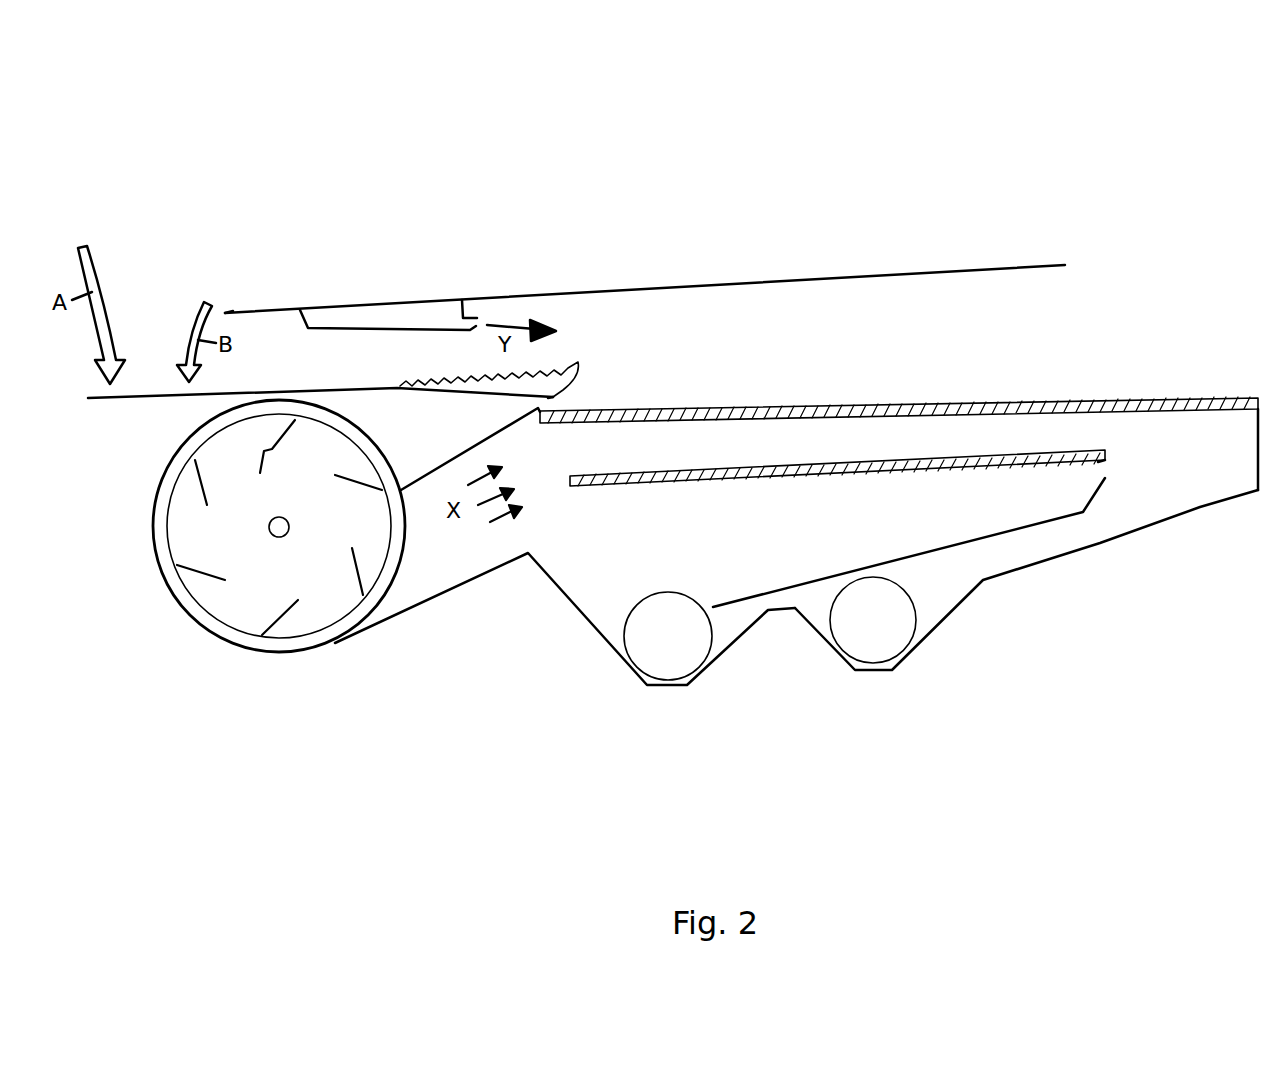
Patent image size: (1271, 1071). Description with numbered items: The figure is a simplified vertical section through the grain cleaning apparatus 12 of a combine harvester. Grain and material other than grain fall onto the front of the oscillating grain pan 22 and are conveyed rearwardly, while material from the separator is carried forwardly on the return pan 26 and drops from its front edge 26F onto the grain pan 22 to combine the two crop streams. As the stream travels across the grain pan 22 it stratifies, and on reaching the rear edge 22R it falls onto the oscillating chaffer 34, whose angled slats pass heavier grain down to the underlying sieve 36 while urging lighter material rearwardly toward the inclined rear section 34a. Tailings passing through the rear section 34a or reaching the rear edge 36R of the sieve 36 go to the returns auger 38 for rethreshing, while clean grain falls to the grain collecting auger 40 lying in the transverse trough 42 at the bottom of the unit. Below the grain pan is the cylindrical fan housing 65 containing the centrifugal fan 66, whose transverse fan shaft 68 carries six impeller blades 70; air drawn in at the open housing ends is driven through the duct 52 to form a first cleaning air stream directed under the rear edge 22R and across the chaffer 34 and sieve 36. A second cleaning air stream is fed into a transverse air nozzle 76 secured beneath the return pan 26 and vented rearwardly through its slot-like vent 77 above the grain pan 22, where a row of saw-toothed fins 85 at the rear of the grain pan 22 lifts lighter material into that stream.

The grain cleaning apparatus 12 is at (130, 120).
The grain pan 22 is at (114, 402).
The rear edge of grain pan 22R is at (553, 397).
The return pan 26 is at (985, 258).
The front edge of return pan 26F is at (228, 312).
The chaffer 34 is at (930, 412).
The inclined rear section of chaffer 34a is at (1187, 406).
The sieve 36 is at (667, 477).
The rear edge of sieve 36R is at (1097, 462).
The returns auger 38 is at (910, 635).
The grain collecting auger 40 is at (653, 652).
The transverse trough 42 is at (713, 662).
The duct 52 is at (467, 565).
The fan housing 65 is at (205, 630).
The fan 66 is at (283, 645).
The fan shaft 68 is at (288, 525).
The impeller blades 70 is at (205, 497).
The transverse air nozzle 76 is at (420, 312).
The rearward-directed vent 77 is at (477, 318).
The fins 85 is at (555, 373).